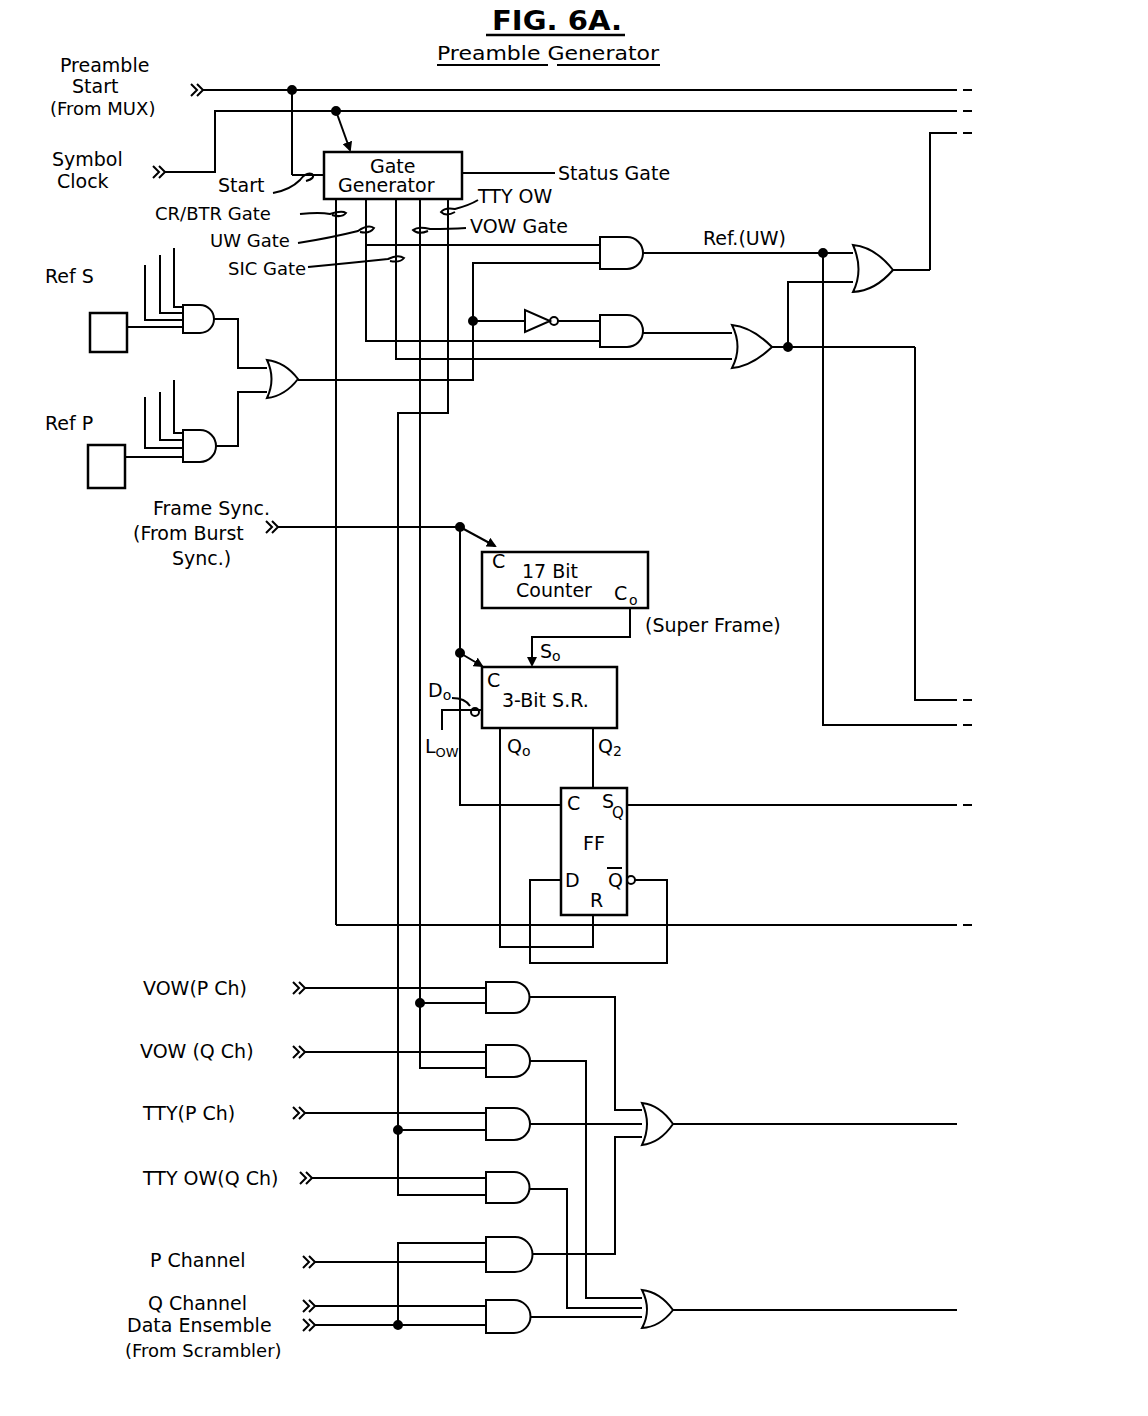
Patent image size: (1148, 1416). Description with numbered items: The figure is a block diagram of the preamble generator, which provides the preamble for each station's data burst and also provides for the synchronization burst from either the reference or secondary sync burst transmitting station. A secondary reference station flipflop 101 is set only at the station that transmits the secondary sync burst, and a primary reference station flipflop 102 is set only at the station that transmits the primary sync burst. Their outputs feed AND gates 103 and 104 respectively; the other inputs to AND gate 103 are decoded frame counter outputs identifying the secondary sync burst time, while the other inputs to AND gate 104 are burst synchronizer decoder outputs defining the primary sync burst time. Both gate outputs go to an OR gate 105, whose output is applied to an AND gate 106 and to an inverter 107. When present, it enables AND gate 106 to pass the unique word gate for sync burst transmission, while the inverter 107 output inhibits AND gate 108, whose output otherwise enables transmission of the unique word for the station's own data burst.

The secondary reference station flipflop 101 is at (90, 337).
The primary reference station flipflop 102 is at (105, 476).
The AND gate 103 is at (203, 312).
The AND gate 104 is at (203, 432).
The OR gate 105 is at (285, 362).
The AND gate 106 is at (627, 239).
The inverter 107 is at (540, 316).
The AND gate 108 is at (625, 333).